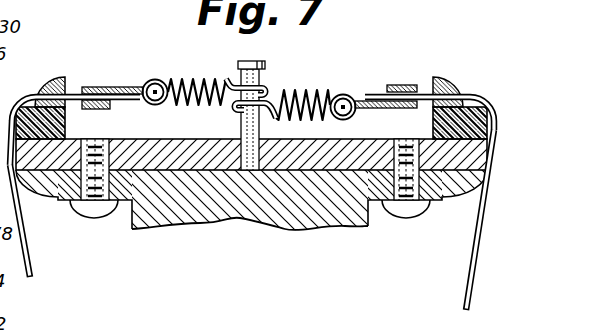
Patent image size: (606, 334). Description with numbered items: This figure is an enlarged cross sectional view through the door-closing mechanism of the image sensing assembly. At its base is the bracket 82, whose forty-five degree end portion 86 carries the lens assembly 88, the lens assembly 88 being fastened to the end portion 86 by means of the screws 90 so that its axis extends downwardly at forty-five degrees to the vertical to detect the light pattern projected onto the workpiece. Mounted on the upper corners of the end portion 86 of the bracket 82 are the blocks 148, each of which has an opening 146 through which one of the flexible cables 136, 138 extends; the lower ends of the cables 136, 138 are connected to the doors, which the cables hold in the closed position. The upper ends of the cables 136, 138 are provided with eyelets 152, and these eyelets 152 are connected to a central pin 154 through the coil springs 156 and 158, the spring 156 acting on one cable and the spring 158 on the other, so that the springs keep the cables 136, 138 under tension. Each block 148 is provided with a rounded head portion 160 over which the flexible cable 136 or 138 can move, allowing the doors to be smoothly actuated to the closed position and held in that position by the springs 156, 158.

The bracket 82 is at (217, 174).
The 45 degree end portion 86 is at (182, 123).
The lens assembly 88 is at (296, 232).
The screws 90 is at (104, 206).
The flexible cable 136 is at (34, 266).
The flexible cable 138 is at (465, 296).
The opening 146 is at (66, 93).
The block 148 is at (70, 124).
The eyelets 152 is at (106, 87).
The central pin 154 is at (265, 68).
The coil spring 156 is at (197, 64).
The coil spring 158 is at (292, 92).
The rounded head portion 160 is at (9, 125).